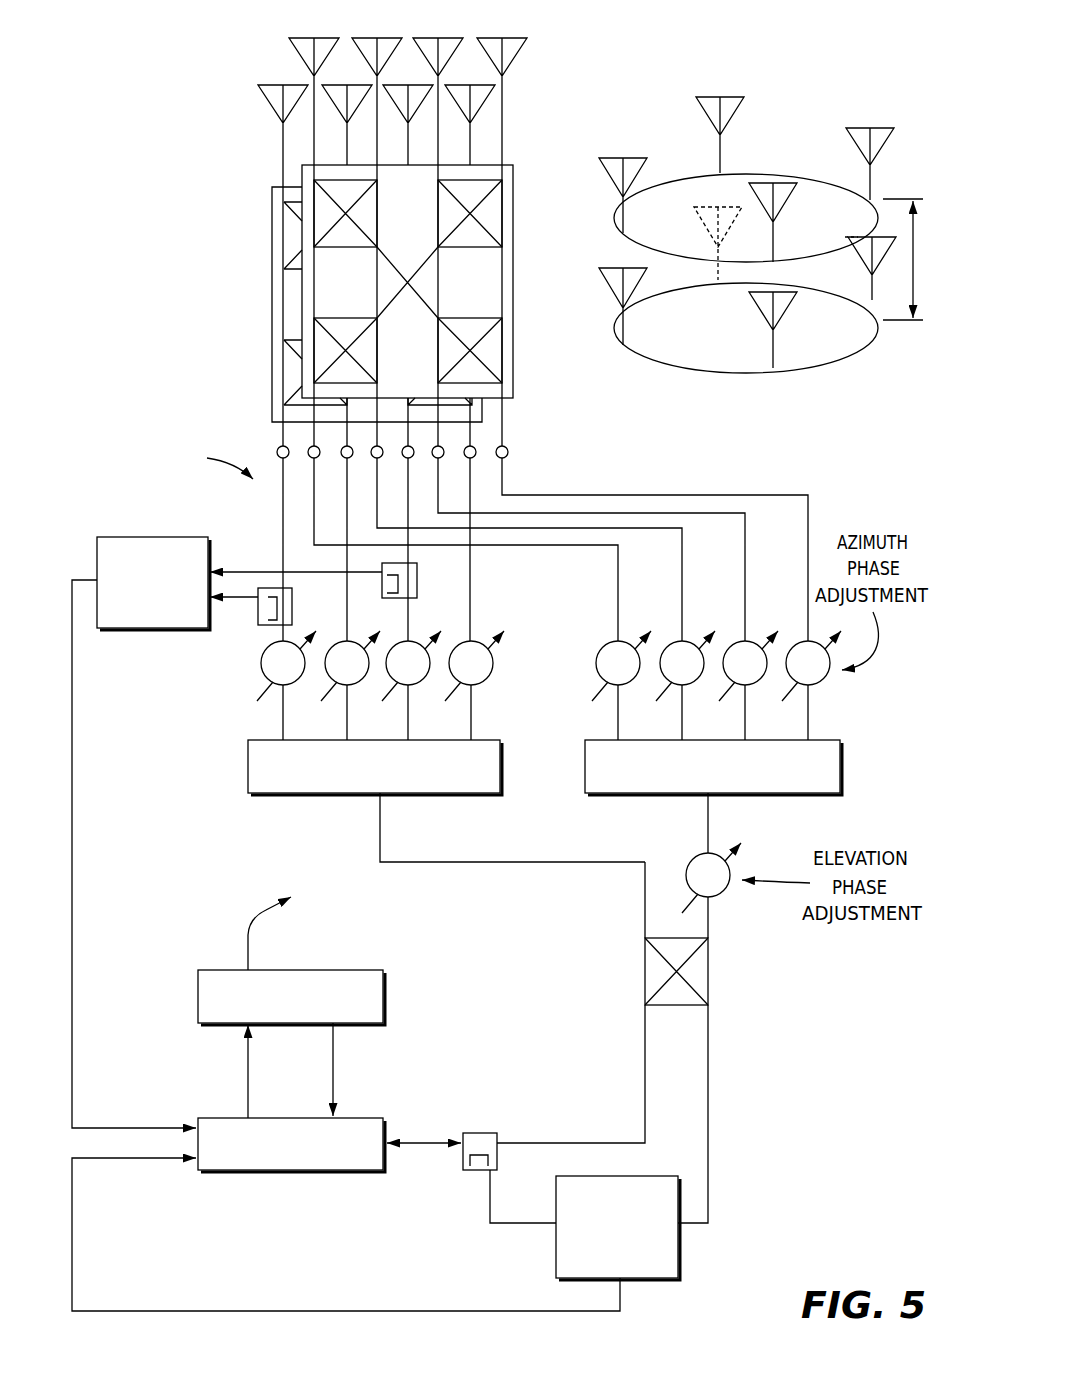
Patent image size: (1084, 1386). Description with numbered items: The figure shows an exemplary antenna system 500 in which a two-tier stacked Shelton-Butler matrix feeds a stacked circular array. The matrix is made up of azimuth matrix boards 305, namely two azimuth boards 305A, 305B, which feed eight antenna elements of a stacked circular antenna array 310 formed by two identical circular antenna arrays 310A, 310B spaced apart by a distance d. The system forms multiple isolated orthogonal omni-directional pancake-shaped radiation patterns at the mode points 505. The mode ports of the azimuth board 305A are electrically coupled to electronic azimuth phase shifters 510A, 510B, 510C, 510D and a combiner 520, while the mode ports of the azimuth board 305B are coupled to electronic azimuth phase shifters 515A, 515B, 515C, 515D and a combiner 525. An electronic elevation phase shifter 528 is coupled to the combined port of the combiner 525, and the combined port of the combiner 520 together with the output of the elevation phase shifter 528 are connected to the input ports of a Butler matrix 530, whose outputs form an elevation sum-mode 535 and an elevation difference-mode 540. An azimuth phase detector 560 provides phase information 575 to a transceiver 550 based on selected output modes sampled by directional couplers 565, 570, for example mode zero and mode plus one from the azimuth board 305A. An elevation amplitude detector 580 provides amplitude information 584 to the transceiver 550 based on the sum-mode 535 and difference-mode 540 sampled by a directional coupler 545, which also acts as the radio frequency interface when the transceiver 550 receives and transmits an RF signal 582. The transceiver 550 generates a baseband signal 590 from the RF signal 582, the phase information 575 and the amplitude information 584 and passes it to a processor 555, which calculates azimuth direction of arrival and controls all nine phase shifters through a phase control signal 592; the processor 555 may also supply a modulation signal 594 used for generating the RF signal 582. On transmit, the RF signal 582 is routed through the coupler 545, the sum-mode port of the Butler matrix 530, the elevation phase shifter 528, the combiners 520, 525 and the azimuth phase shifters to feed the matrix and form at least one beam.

The antenna system 500 is at (186, 35).
The azimuth matrix boards 305 is at (264, 207).
The azimuth board 305A is at (272, 330).
The azimuth board 305B is at (513, 212).
The stacked circular antenna array 310 is at (547, 50).
The circular antenna array 310A is at (757, 173).
The circular antenna array 310B is at (793, 372).
The mode points 505 is at (527, 456).
The electronic azimuth phase shifter 510A is at (273, 683).
The electronic azimuth phase shifter 510B is at (338, 687).
The electronic azimuth phase shifter 510C is at (399, 687).
The electronic azimuth phase shifter 510D is at (485, 680).
The electronic azimuth phase shifter 515A is at (609, 687).
The electronic azimuth phase shifter 515B is at (673, 687).
The electronic azimuth phase shifter 515C is at (736, 687).
The electronic azimuth phase shifter 515D is at (799, 687).
The combiner 520 is at (500, 773).
The combiner 525 is at (840, 773).
The electronic elevation phase shifter 528 is at (697, 855).
The Butler matrix 530 is at (708, 968).
The elevation sum-mode 535 is at (645, 1025).
The elevation difference-mode 540 is at (708, 1030).
The directional coupler 545 is at (475, 1132).
The transceiver 550 is at (313, 1171).
The processor 555 is at (383, 990).
The azimuth phase detector 560 is at (186, 537).
The directional coupler 565 is at (263, 627).
The directional coupler 570 is at (418, 590).
The phase information 575 is at (73, 738).
The elevation amplitude detector 580 is at (678, 1278).
The RF signal 582 is at (425, 1147).
The amplitude information 584 is at (359, 1311).
The baseband signal 590 is at (248, 1090).
The phase control signal 592 is at (250, 928).
The modulation signal 594 is at (333, 1050).